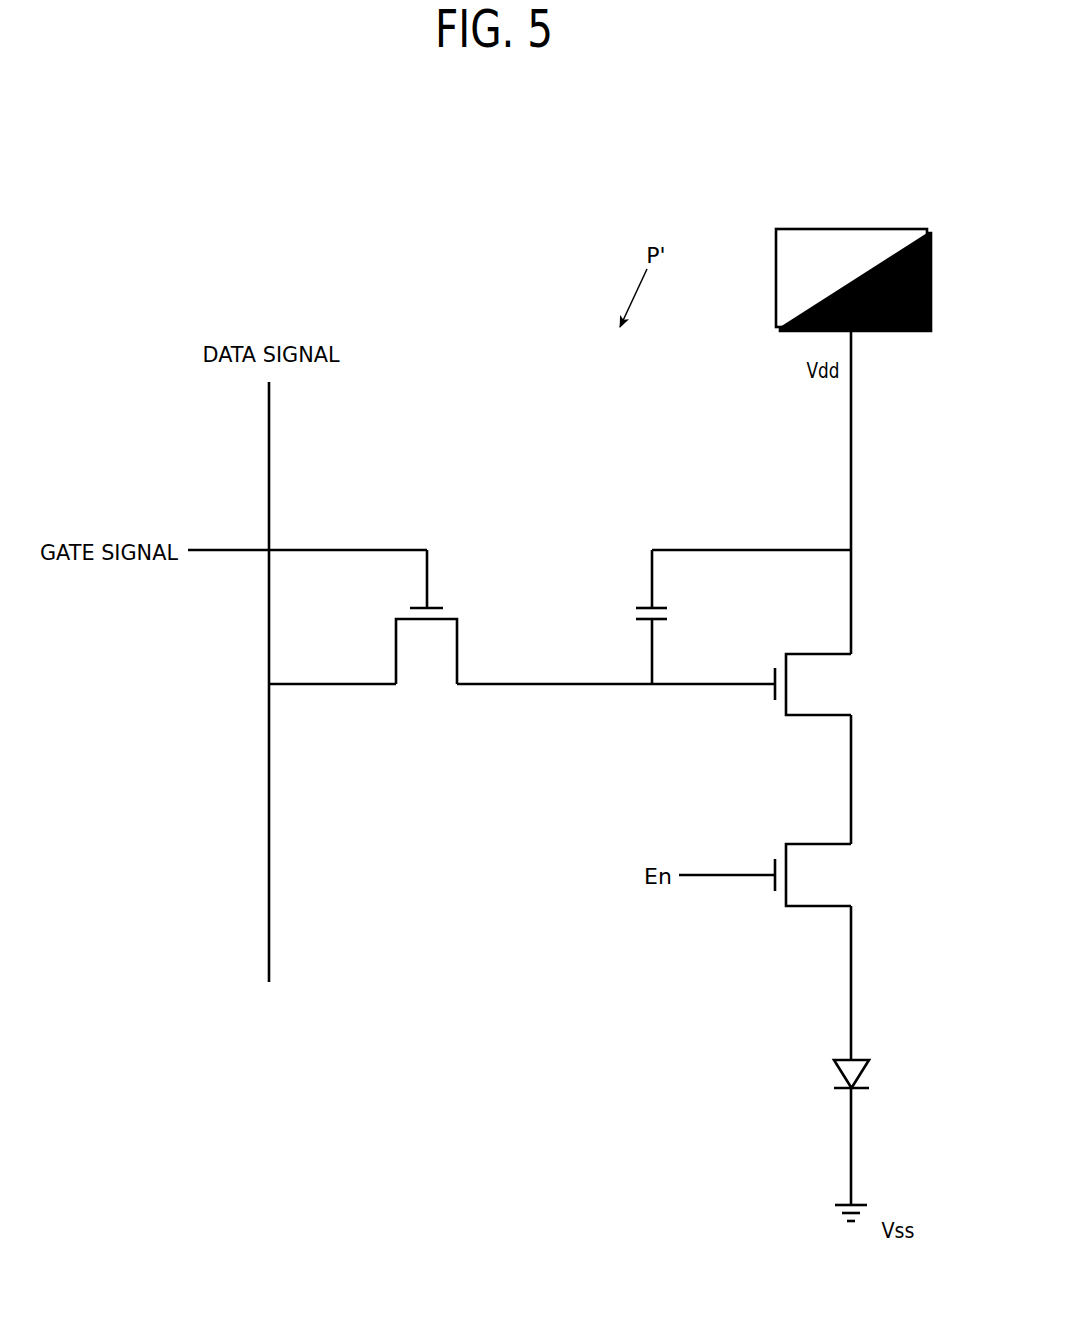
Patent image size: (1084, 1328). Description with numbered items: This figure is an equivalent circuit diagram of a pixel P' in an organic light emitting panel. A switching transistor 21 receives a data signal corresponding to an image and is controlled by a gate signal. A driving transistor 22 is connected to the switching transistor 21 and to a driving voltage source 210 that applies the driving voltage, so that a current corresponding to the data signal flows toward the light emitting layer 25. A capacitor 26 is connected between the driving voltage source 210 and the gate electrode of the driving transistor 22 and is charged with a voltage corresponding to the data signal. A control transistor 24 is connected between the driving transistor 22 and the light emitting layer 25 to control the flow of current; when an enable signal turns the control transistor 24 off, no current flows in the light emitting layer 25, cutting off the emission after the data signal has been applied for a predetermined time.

The driving voltage source 210 is at (851, 229).
The switching transistor 21 is at (423, 699).
The driving transistor 22 is at (868, 694).
The control transistor 24 is at (868, 882).
The light emitting layer 25 is at (818, 1086).
The capacitor 26 is at (640, 540).